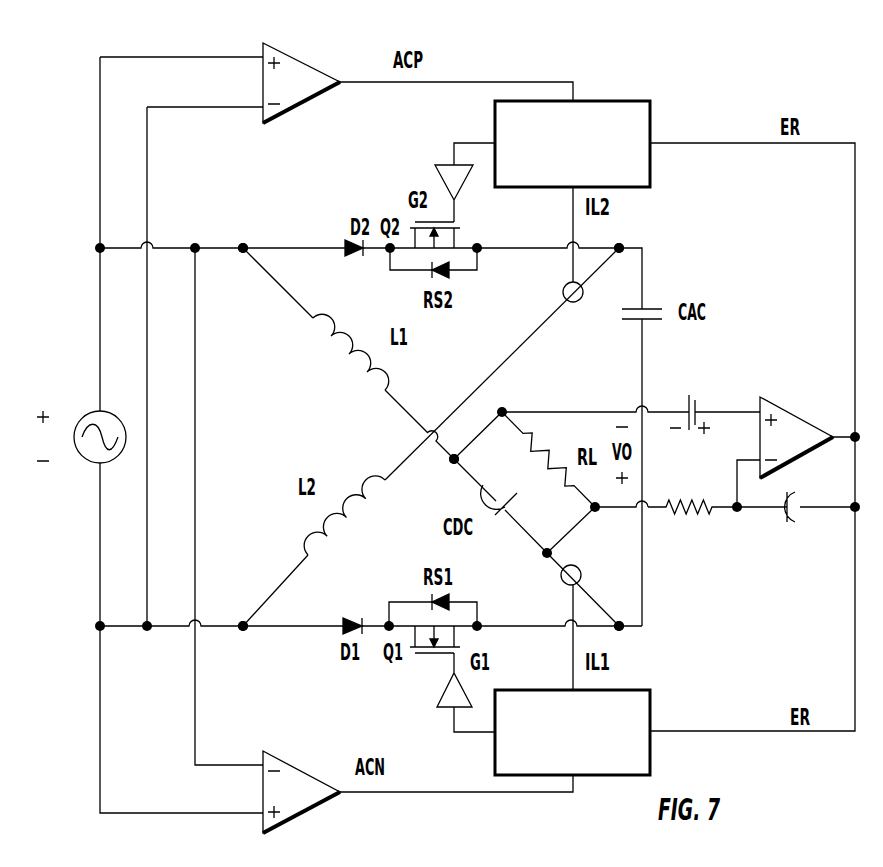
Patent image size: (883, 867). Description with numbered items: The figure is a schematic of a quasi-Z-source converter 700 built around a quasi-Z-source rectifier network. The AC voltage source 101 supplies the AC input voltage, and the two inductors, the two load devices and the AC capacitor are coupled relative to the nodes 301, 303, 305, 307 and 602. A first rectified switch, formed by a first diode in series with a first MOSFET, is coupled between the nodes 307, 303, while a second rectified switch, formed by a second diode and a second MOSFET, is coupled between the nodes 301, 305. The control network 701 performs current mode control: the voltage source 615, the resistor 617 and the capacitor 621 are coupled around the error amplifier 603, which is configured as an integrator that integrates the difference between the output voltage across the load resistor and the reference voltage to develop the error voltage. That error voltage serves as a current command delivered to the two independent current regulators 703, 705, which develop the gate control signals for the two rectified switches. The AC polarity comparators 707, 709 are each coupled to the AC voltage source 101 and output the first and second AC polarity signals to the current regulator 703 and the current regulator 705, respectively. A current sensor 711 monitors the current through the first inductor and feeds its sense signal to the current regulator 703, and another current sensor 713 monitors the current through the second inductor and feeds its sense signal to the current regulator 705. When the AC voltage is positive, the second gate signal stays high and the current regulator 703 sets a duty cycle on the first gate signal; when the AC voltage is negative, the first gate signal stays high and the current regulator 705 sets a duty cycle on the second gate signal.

The AC voltage source 101 is at (92, 413).
The node 301 is at (243, 248).
The node 303 is at (619, 626).
The node 305 is at (619, 248).
The node 307 is at (243, 626).
The node 602 is at (454, 459).
The error amplifier 603 is at (796, 452).
The voltage source 615 is at (696, 400).
The resistor 617 is at (672, 501).
The capacitor 621 is at (783, 520).
The quasi-Z-source converter 700 is at (462, 30).
The control network 701 is at (775, 612).
The current regulator 703 is at (650, 695).
The current regulator 705 is at (650, 112).
The AC polarity comparator 707 is at (301, 792).
The AC polarity comparator 709 is at (301, 83).
The current sensor 711 is at (575, 566).
The current sensor 713 is at (577, 302).